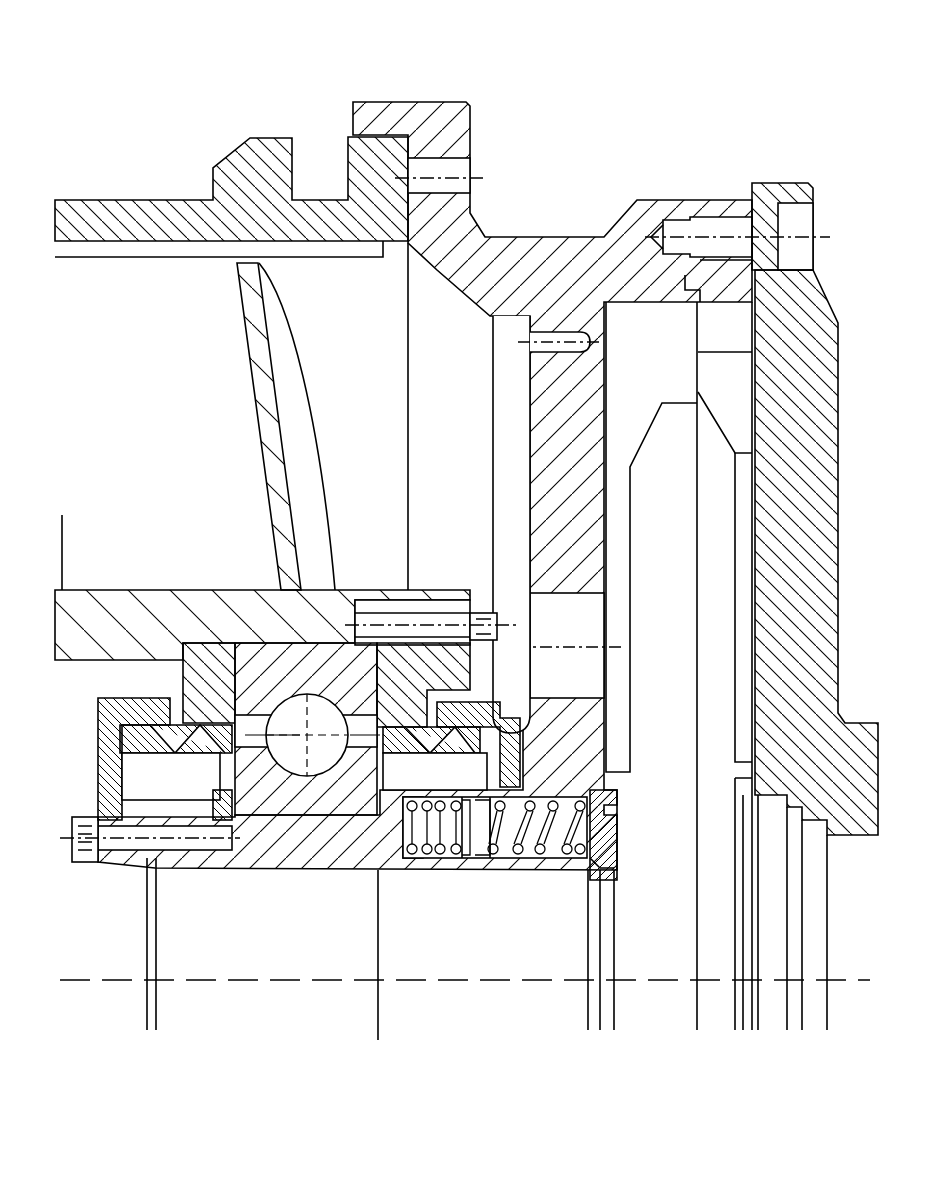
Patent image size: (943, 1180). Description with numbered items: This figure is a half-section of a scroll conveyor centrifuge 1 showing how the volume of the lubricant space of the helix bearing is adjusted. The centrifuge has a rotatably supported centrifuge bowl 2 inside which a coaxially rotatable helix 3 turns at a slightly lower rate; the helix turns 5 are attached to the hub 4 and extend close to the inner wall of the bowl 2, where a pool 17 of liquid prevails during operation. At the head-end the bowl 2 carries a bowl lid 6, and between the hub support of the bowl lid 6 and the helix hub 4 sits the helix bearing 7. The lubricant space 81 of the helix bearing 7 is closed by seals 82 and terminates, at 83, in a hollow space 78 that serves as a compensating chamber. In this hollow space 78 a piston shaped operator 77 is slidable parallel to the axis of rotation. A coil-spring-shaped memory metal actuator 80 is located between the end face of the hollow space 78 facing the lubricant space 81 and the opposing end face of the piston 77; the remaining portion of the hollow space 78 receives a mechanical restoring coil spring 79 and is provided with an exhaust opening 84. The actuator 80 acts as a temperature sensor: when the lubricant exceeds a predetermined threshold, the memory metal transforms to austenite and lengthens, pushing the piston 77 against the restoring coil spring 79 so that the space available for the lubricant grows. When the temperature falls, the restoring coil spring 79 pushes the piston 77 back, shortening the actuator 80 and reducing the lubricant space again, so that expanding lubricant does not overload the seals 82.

The scroll conveyor centrifuge 1 is at (667, 80).
The centrifuge bowl 2 is at (127, 218).
The pool 17 is at (130, 339).
The helix 3 is at (114, 447).
The hub 4 is at (124, 612).
The helix turns 5 is at (280, 488).
The bowl lid 6 is at (568, 265).
The helix bearing 7 is at (262, 682).
The seals 82 is at (135, 715).
The lubricant space 81 is at (363, 732).
The termination of lubricant space 83 is at (397, 795).
The actuator 80 is at (440, 858).
The piston shaped operator 77 is at (480, 868).
The hollow space 78 is at (528, 878).
The restoring coil spring 79 is at (600, 877).
The exhaust opening 84 is at (615, 815).